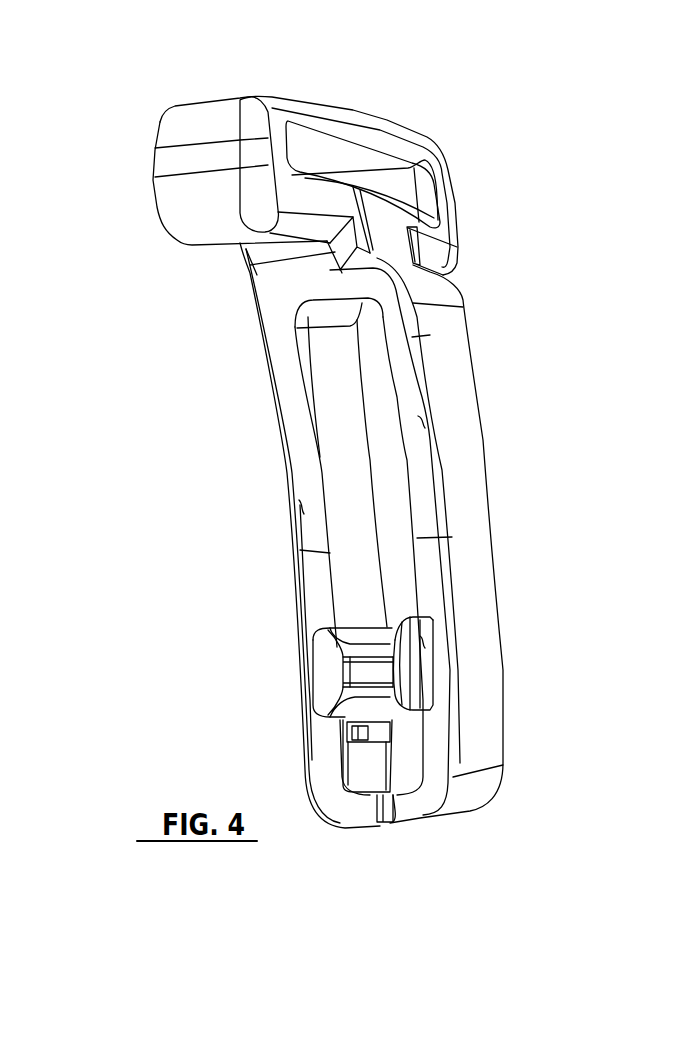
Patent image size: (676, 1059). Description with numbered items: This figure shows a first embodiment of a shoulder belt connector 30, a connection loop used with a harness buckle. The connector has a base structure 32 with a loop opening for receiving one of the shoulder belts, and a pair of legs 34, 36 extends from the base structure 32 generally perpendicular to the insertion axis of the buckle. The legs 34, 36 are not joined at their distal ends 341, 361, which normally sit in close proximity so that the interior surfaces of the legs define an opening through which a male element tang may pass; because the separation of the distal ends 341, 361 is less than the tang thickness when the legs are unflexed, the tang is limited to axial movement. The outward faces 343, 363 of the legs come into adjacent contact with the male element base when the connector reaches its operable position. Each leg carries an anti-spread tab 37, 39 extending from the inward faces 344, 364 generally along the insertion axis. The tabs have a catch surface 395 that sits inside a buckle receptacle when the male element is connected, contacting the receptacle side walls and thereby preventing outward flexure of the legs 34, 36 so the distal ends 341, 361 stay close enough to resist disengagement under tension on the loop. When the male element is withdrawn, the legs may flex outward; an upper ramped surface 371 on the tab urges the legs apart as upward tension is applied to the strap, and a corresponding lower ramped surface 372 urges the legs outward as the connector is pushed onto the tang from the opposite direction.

The shoulder belt connector 30 is at (478, 118).
The base structure 32 is at (390, 115).
The leg 34 is at (268, 455).
The leg 36 is at (459, 378).
The anti-spread tab 37 is at (331, 668).
The anti-spread tab 39 is at (413, 662).
The distal end 341 is at (387, 828).
The outward face 343 is at (384, 477).
The inward face 344 is at (298, 506).
The distal end 361 is at (395, 826).
The outward face 363 is at (496, 507).
The inward face 364 is at (424, 421).
The upper ramped surface 371 is at (363, 638).
The lower ramped surface 372 is at (358, 700).
The catch surface 395 is at (424, 639).